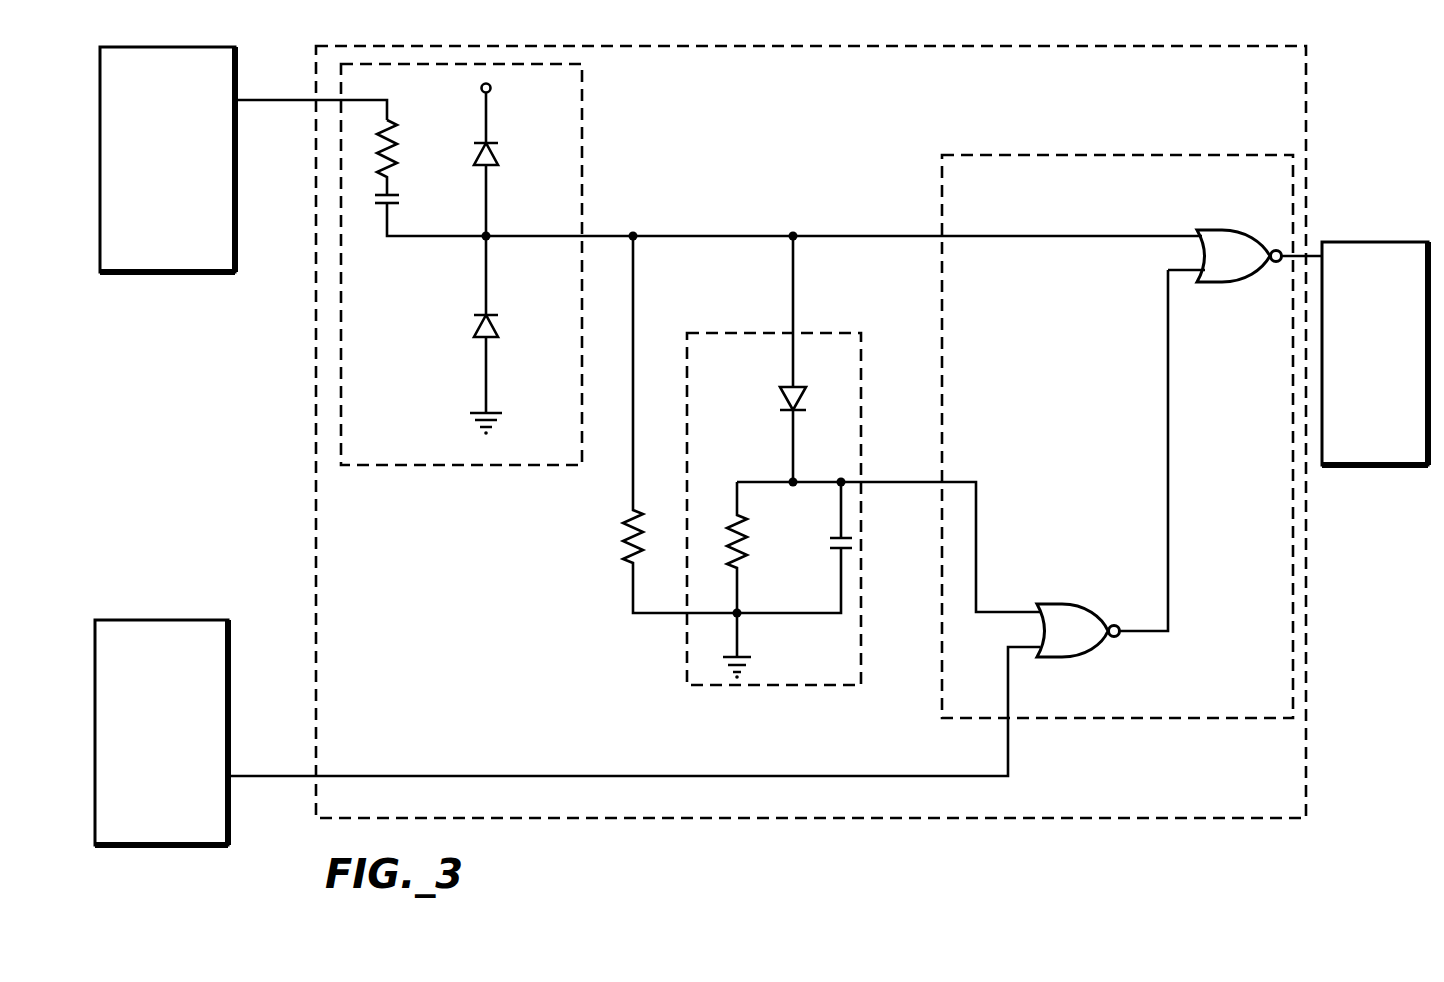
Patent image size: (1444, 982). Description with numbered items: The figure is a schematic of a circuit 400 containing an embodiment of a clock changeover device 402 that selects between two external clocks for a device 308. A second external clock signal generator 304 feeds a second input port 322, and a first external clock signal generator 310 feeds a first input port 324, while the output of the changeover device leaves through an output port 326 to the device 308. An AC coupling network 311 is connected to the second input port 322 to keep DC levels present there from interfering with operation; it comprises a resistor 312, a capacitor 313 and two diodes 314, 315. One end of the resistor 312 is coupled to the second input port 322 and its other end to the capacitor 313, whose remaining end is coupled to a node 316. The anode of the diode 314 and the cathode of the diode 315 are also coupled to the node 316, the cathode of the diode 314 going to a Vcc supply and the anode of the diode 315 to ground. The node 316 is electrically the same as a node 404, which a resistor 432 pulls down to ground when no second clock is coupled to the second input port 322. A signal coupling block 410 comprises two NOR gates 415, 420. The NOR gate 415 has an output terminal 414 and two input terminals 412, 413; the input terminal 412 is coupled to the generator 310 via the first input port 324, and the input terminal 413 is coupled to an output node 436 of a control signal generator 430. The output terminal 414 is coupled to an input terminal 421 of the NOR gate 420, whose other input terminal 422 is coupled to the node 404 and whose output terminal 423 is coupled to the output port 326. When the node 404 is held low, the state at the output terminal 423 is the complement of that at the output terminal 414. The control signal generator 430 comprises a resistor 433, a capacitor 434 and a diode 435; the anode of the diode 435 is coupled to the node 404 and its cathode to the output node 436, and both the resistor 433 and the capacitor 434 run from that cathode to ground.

The second external clock signal generator 304 is at (155, 272).
The device 308 is at (1352, 468).
The first external clock signal generator 310 is at (185, 620).
The AC coupling network 311 is at (410, 468).
The resistor 312 is at (392, 133).
The capacitor 313 is at (392, 204).
The diode 314 is at (497, 163).
The diode 315 is at (495, 336).
The node 316 is at (490, 232).
The second input port 322 is at (320, 98).
The first input port 324 is at (312, 772).
The output port 326 is at (1312, 255).
The circuit 400 is at (761, 470).
The clock changeover device 402 is at (1108, 822).
The node 404 is at (640, 233).
The signal coupling block 410 is at (1100, 720).
The input terminal 412 is at (1035, 645).
The input terminal 413 is at (1035, 607).
The output terminal 414 is at (1120, 625).
The NOR gate 415 is at (1072, 660).
The NOR gate 420 is at (1196, 266).
The input terminal 421 is at (1198, 268).
The input terminal 422 is at (1198, 236).
The output terminal 423 is at (1281, 250).
The control signal generator 430 is at (790, 688).
The resistor 432 is at (622, 537).
The resistor 433 is at (752, 553).
The capacitor 434 is at (836, 538).
The diode 435 is at (798, 386).
The output node 436 is at (862, 482).